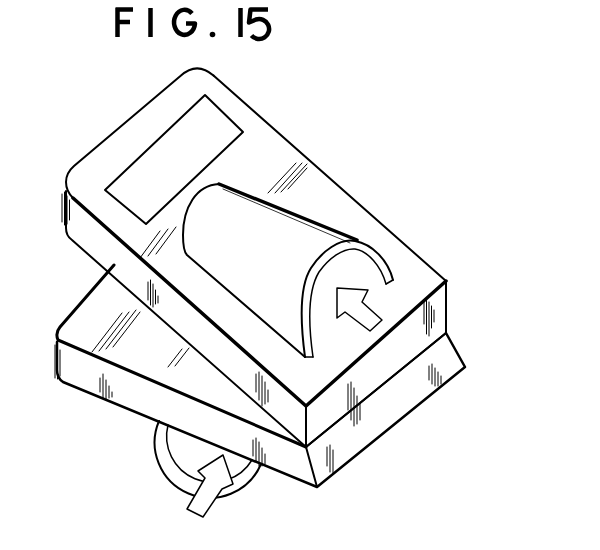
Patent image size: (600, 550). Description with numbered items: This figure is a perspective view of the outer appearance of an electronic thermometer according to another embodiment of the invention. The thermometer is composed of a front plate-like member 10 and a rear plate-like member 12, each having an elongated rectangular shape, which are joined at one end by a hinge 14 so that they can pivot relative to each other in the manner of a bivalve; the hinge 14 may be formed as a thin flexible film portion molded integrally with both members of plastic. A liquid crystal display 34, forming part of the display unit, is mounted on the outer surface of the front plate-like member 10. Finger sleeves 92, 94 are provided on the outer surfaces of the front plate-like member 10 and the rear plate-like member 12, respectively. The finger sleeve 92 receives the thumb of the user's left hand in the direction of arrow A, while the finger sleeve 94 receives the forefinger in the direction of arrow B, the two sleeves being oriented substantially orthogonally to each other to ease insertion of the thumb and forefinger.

The front plate-like member 10 is at (346, 152).
The rear plate-like member 12 is at (96, 383).
The hinge 14 is at (433, 343).
The liquid crystal display 34 is at (240, 120).
The finger sleeve 92 is at (333, 229).
The finger sleeve 94 is at (165, 456).